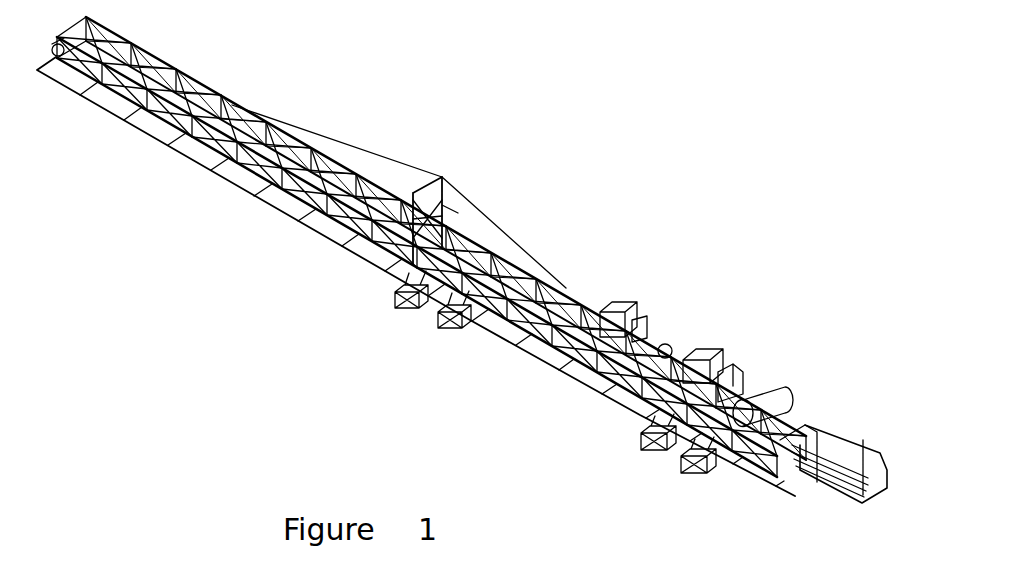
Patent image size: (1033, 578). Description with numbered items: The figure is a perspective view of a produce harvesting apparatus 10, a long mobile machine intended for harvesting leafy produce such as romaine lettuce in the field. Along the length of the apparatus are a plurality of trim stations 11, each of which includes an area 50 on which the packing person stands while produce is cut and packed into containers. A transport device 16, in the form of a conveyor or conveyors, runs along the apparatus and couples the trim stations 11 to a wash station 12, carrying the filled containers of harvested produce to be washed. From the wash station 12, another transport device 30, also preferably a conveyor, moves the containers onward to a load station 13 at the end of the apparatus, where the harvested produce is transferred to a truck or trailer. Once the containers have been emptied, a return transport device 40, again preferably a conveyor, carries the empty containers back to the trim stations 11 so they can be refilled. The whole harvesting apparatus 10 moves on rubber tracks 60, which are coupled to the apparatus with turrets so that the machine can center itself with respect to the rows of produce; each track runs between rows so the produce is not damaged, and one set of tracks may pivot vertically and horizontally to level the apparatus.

The produce harvesting apparatus 10 is at (707, 105).
The trim station 11 is at (314, 250).
The wash station 12 is at (760, 385).
The load station 13 is at (893, 462).
The transport device 16 is at (535, 343).
The transport device 30 is at (823, 484).
The return transport device 40 is at (543, 287).
The area 50 is at (264, 198).
The rubber tracks 60 is at (400, 305).